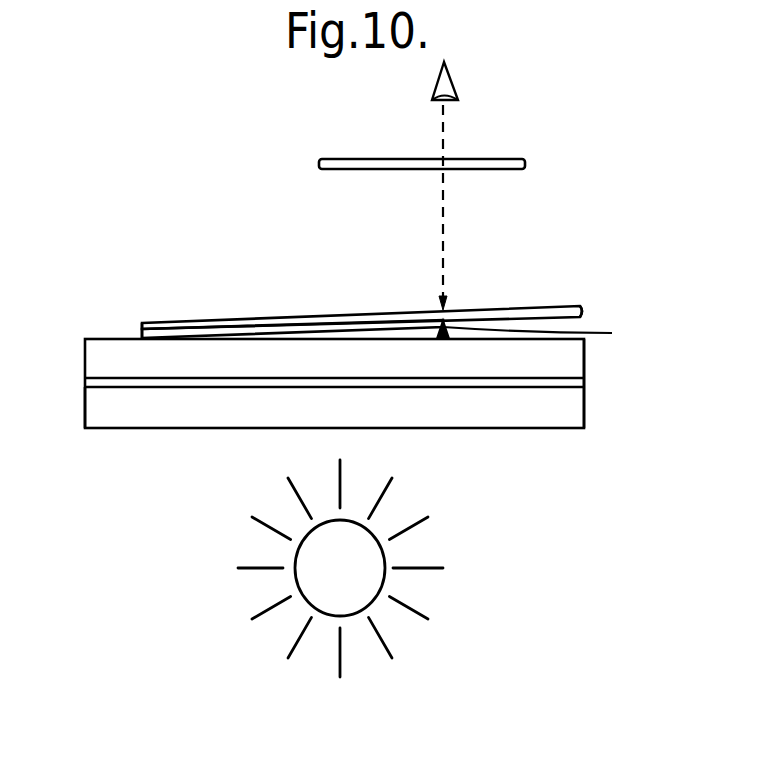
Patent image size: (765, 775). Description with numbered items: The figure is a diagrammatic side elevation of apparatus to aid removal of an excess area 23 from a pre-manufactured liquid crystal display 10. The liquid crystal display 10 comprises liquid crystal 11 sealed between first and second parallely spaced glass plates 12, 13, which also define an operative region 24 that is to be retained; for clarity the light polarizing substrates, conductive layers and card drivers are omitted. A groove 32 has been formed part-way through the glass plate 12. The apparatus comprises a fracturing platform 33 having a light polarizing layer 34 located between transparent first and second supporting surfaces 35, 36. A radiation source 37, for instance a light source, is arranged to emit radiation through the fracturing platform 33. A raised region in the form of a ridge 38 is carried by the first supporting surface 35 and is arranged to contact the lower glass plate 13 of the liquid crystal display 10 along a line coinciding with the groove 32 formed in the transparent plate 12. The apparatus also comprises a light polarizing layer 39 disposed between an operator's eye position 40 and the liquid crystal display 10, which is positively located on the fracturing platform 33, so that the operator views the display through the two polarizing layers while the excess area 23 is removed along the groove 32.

The pre-manufactured liquid crystal display 10 is at (368, 354).
The liquid crystal 11 is at (142, 337).
The first glass plate 12 is at (170, 322).
The second glass plate 13 is at (218, 331).
The excess area 23 is at (555, 308).
The operative region 24 is at (213, 320).
The groove 32 is at (446, 310).
The fracturing platform 33 is at (365, 419).
The light polarizing layer 34 is at (110, 387).
The first supporting surface 35 is at (575, 370).
The second supporting surface 36 is at (573, 418).
The radiation source 37 is at (327, 579).
The ridge 38 is at (544, 335).
The light polarizing layer 39 is at (507, 157).
The operator's eye position 40 is at (453, 87).